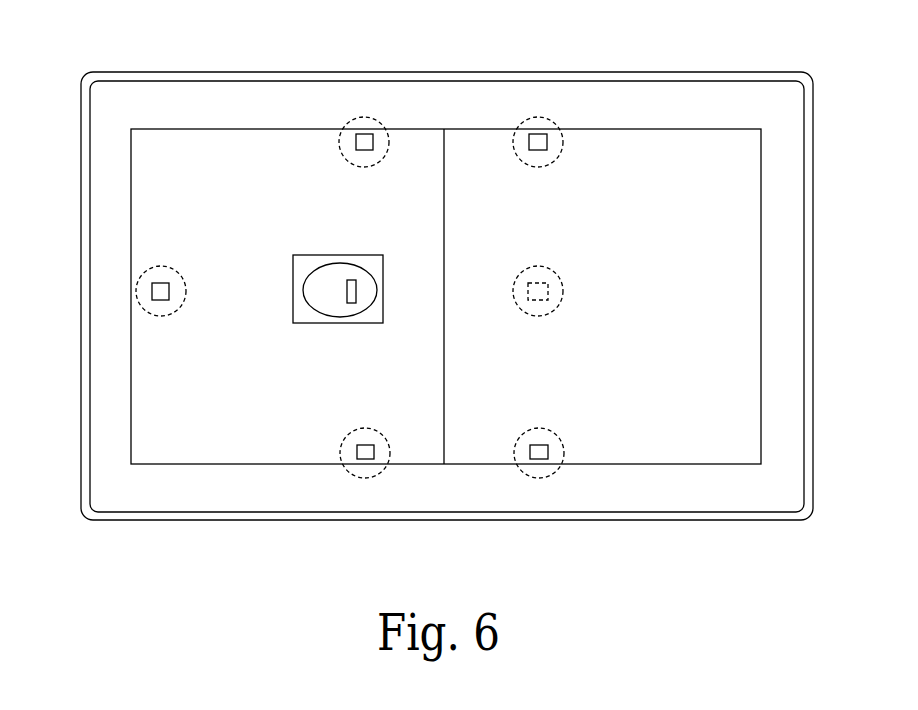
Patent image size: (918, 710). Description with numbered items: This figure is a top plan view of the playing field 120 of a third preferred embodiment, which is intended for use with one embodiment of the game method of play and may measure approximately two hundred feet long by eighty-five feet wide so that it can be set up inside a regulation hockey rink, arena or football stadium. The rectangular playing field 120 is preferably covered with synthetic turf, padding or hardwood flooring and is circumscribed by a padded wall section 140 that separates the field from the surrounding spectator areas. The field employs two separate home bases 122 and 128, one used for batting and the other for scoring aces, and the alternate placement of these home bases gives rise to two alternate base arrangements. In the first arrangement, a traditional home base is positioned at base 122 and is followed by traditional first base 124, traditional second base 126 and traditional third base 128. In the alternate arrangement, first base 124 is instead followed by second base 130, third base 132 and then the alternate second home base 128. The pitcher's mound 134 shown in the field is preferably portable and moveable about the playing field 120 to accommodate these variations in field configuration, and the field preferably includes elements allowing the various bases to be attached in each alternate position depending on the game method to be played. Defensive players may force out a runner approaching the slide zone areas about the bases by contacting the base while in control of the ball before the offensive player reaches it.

The playing field 120 is at (703, 60).
The home base 122 is at (160, 300).
The first base 124 is at (365, 445).
The second base 126 is at (538, 283).
The home base 128 is at (364, 150).
The second base 130 is at (538, 445).
The third base 132 is at (538, 150).
The pitcher's mound 134 is at (303, 292).
The padded wall section 140 is at (81, 292).